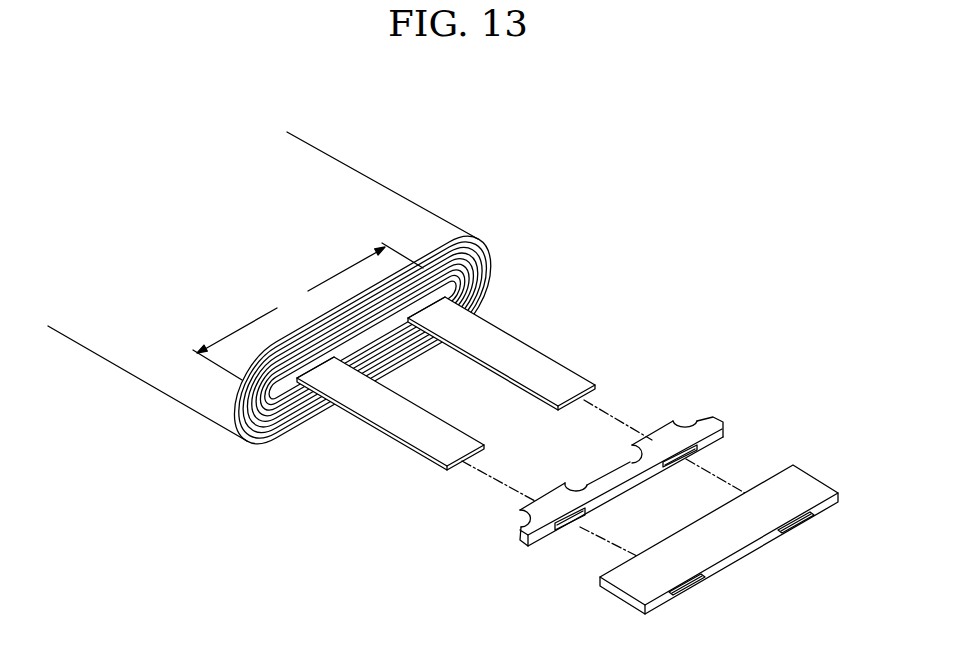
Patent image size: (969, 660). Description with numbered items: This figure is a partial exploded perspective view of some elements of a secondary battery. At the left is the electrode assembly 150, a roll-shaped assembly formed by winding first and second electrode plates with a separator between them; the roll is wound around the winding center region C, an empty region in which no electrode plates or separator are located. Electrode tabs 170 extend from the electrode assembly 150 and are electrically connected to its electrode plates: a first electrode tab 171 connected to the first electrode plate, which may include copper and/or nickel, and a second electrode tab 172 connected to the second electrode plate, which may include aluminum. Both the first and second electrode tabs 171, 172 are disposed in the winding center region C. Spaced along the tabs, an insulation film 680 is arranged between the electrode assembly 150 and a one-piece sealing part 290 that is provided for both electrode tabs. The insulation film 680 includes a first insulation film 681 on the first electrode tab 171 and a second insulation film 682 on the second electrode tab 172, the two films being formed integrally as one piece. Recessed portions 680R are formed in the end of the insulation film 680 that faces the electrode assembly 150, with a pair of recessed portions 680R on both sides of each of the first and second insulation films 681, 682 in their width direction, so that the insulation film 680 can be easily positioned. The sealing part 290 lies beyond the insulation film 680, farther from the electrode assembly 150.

The electrode assembly 150 is at (412, 161).
The electrode tab 170 is at (455, 377).
The first electrode tab 171 is at (559, 371).
The second electrode tab 172 is at (414, 448).
The insulation film 680 is at (609, 460).
The recessed portions 680R is at (504, 529).
The first insulation film 681 is at (714, 443).
The second insulation film 682 is at (606, 503).
The sealing part 290 is at (815, 477).
The winding center region C is at (308, 311).